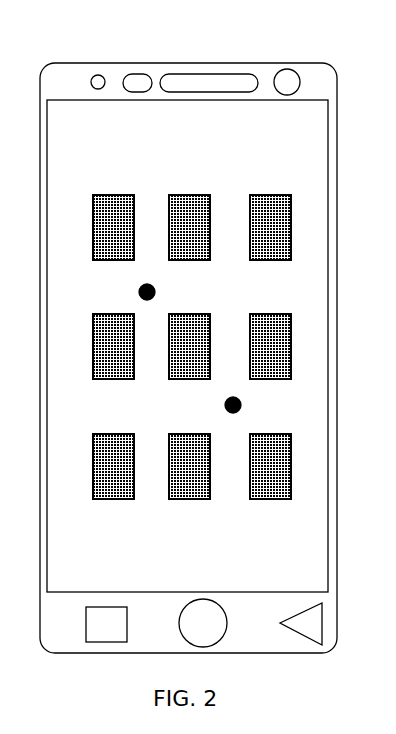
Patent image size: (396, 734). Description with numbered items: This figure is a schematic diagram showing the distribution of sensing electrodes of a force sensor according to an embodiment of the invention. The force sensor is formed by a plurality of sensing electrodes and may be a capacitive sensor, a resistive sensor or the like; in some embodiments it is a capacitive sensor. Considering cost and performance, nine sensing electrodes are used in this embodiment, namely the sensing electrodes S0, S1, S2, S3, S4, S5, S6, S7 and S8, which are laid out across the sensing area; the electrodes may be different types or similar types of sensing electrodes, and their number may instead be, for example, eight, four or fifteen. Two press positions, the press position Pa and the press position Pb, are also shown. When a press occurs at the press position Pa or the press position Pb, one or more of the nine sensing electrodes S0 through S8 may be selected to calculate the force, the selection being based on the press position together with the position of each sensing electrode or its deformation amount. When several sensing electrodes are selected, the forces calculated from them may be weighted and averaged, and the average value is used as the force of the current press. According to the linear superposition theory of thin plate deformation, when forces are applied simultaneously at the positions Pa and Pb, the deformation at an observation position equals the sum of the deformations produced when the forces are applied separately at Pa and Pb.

The sensing electrode S0 is at (113, 227).
The sensing electrode S1 is at (189, 227).
The sensing electrode S2 is at (270, 227).
The sensing electrode S3 is at (113, 346).
The sensing electrode S4 is at (189, 346).
The sensing electrode S5 is at (270, 346).
The sensing electrode S6 is at (113, 466).
The sensing electrode S7 is at (189, 466).
The sensing electrode S8 is at (270, 466).
The press position Pa is at (136, 292).
The press position Pb is at (245, 405).